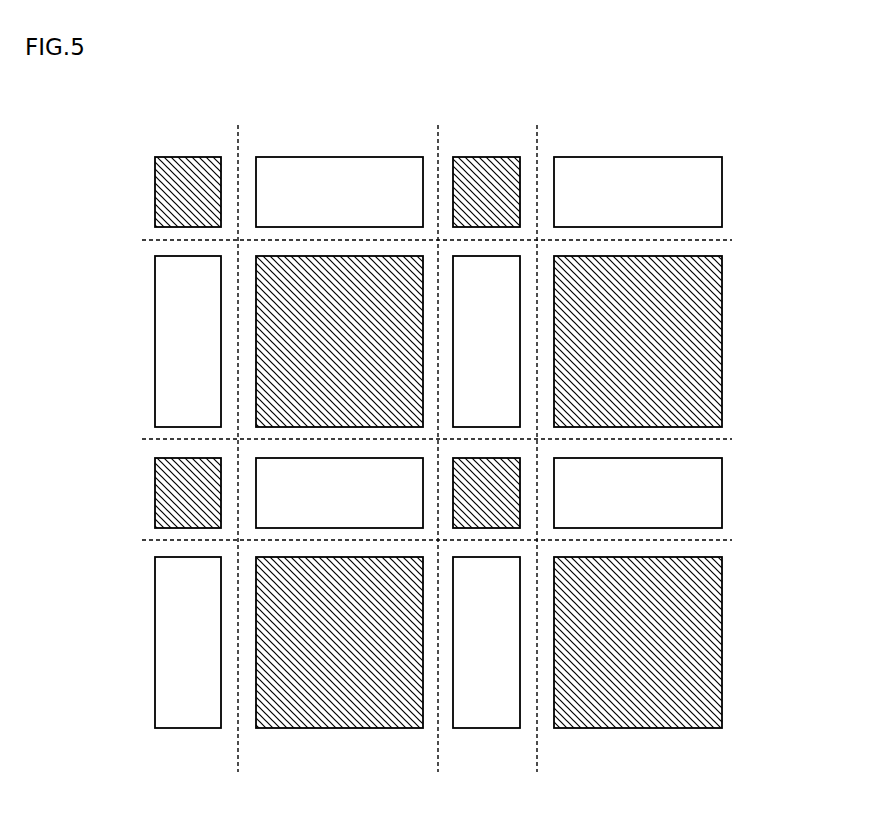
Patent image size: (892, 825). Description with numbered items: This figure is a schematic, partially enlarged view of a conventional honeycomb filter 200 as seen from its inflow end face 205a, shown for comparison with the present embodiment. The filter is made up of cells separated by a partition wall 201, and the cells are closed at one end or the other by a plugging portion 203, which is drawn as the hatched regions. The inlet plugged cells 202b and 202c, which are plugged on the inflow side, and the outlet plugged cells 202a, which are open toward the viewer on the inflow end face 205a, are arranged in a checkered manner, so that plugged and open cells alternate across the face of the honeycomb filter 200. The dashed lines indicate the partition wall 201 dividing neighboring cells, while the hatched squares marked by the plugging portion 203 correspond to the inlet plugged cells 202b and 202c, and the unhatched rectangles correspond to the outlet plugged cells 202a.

The honeycomb filter 200 is at (807, 128).
The partition wall 201 is at (160, 251).
The outlet plugged cell 202a is at (712, 207).
The inlet plugged cell 202b is at (473, 165).
The inlet plugged cell 202c is at (710, 343).
The plugging portion 203 is at (316, 268).
The inflow end face 205a is at (172, 145).